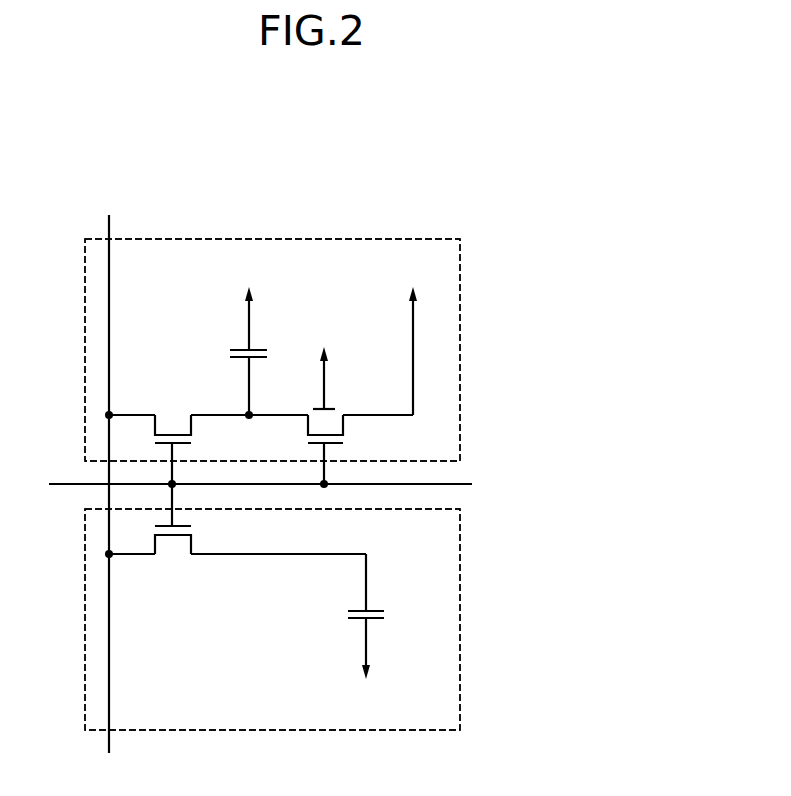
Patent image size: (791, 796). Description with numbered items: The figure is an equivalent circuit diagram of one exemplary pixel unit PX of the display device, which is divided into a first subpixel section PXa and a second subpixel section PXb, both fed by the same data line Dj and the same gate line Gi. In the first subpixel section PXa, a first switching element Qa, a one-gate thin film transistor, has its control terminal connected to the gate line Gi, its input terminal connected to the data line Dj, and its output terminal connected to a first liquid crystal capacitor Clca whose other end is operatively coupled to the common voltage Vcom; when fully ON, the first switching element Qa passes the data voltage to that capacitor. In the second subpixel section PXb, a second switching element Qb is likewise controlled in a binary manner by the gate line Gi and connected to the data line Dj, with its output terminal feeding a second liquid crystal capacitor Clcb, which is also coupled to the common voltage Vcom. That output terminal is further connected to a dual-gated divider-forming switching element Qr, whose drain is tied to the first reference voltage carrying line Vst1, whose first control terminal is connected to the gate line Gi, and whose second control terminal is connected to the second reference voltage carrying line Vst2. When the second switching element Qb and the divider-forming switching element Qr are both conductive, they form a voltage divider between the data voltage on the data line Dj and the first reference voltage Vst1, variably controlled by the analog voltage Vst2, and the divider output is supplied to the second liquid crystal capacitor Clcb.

The pixel unit PX is at (306, 212).
The first subpixel section PXa is at (460, 619).
The second subpixel section PXb is at (460, 349).
The data line Dj is at (109, 291).
The gate line Gi is at (70, 483).
The first switching element Qa is at (173, 531).
The second switching element Qb is at (173, 437).
The divider-forming switching element Qr is at (341, 449).
The first liquid crystal capacitor Clca is at (387, 592).
The second liquid crystal capacitor Clcb is at (226, 378).
The common voltage Vcom is at (309, 485).
The first reference voltage carrying line Vst1 is at (412, 338).
The second reference voltage carrying line Vst2 is at (324, 364).